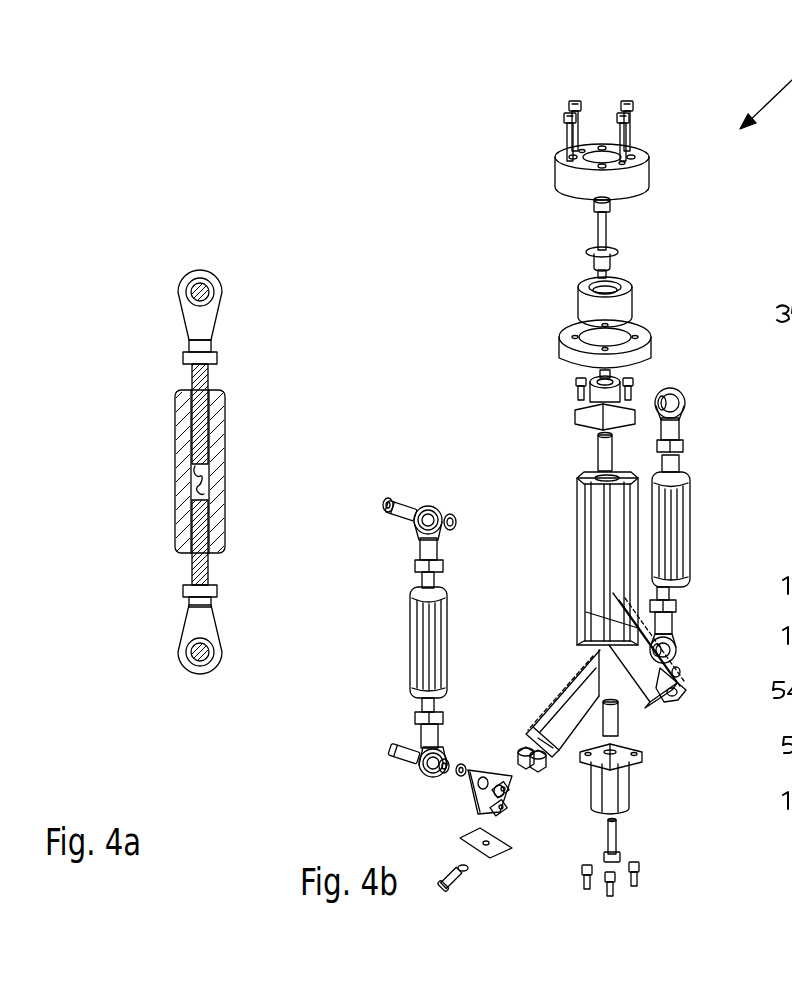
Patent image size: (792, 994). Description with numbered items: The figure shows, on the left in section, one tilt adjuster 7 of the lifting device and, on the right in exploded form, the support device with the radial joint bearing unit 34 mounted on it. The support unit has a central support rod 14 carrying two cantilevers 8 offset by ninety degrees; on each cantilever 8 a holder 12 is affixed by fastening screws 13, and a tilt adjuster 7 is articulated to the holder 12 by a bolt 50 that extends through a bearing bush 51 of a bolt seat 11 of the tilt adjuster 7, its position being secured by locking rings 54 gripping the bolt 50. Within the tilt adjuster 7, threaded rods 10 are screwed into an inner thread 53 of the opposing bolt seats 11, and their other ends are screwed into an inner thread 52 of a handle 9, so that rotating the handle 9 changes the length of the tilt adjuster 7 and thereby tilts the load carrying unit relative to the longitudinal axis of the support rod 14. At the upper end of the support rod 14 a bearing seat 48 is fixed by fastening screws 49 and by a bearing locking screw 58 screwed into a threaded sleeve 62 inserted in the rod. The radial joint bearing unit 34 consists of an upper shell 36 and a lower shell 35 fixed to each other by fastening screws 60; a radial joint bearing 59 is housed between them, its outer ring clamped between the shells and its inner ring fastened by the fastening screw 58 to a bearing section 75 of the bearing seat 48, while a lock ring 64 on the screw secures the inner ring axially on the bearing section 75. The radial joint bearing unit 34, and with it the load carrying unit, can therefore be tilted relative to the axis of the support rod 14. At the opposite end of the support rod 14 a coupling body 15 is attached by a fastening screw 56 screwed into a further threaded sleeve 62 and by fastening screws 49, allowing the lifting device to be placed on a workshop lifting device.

In FIG. 4A, the tilt adjuster 7 is at (303, 383).
In FIG. 4B, the cantilever 8 is at (636, 660).
In FIG. 4A, the handle 9 is at (217, 440).
In FIG. 4B, the handle 9 is at (430, 623).
In FIG. 4A, the threaded rod 10 is at (203, 384).
In FIG. 4B, the threaded rod 10 is at (432, 580).
In FIG. 4A, the bolt seat 11 is at (214, 300).
In FIG. 4B, the bolt seat 11 is at (424, 548).
In FIG. 4B, the holder 12 is at (505, 772).
In FIG. 4B, the fastening screw 13 is at (468, 775).
In FIG. 4B, the support rod 14 is at (588, 543).
In FIG. 4B, the coupling body 15 is at (622, 792).
In FIG. 4B, the radial joint bearing unit 34 is at (506, 179).
In FIG. 4B, the lower shell 35 is at (628, 348).
In FIG. 4B, the upper shell 36 is at (618, 178).
In FIG. 4B, the bearing seat 48 is at (578, 416).
In FIG. 4B, the fastening screw 49 is at (581, 390).
In FIG. 4A, the bolt 50 is at (200, 288).
In FIG. 4B, the bolt 50 is at (402, 508).
In FIG. 4A, the bearing bush 51 is at (185, 284).
In FIG. 4B, the bearing bush 51 is at (430, 513).
In FIG. 4A, the inner thread 52 is at (198, 470).
In FIG. 4A, the inner thread 53 is at (192, 356).
In FIG. 4B, the locking ring 54 is at (383, 503).
In FIG. 4B, the fastening screw 56 is at (616, 838).
In FIG. 4B, the fastening screw 58 is at (605, 226).
In FIG. 4B, the radial joint bearing 59 is at (611, 305).
In FIG. 4B, the fastening screw 60 is at (622, 129).
In FIG. 4B, the threaded sleeve 62 is at (600, 455).
In FIG. 4B, the lock ring 64 is at (608, 262).
In FIG. 4B, the bearing section 75 is at (616, 395).